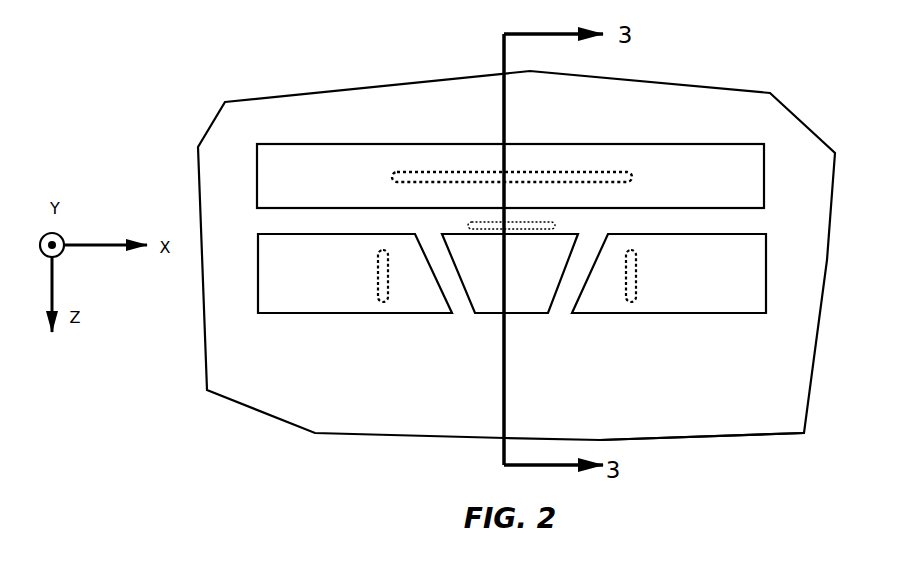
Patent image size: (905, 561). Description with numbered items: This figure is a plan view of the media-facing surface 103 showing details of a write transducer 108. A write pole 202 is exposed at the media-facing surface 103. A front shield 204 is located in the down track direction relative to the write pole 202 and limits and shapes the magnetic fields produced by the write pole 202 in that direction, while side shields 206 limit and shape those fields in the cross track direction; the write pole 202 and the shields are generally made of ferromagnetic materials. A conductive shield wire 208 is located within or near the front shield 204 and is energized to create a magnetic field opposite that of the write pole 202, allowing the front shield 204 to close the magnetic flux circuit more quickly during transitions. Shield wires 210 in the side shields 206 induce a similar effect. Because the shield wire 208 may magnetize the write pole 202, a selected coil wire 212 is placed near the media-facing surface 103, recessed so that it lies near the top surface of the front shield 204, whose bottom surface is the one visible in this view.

The write transducer 108 is at (234, 86).
The media-facing surface 103 is at (763, 422).
The front shield 204 is at (560, 140).
The shield wire 208 is at (405, 171).
The coil wire 212 is at (557, 225).
The side shields 206 is at (315, 307).
The write pole 202 is at (522, 307).
The shield wires 210 is at (385, 303).